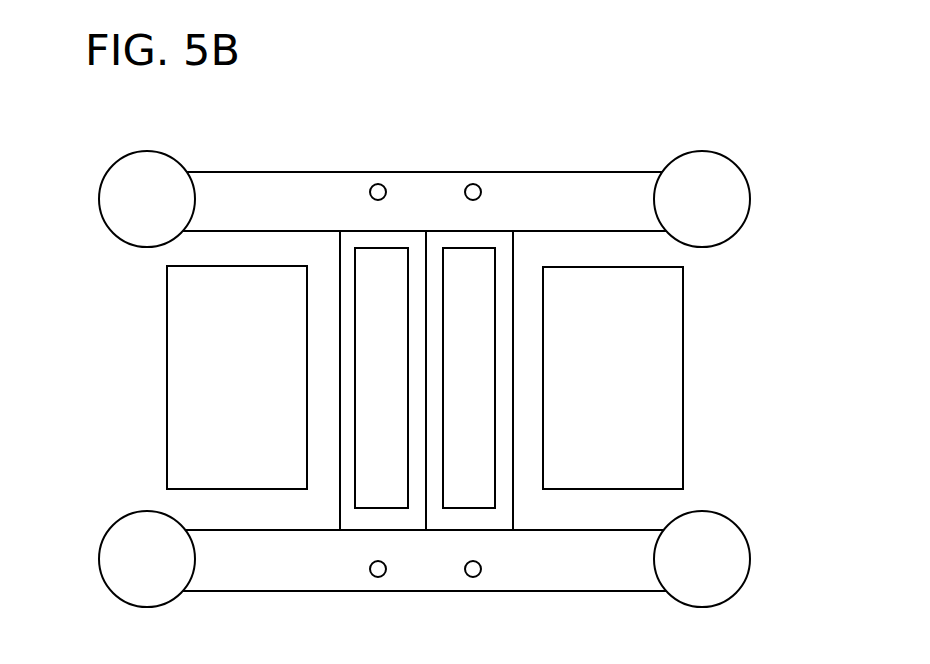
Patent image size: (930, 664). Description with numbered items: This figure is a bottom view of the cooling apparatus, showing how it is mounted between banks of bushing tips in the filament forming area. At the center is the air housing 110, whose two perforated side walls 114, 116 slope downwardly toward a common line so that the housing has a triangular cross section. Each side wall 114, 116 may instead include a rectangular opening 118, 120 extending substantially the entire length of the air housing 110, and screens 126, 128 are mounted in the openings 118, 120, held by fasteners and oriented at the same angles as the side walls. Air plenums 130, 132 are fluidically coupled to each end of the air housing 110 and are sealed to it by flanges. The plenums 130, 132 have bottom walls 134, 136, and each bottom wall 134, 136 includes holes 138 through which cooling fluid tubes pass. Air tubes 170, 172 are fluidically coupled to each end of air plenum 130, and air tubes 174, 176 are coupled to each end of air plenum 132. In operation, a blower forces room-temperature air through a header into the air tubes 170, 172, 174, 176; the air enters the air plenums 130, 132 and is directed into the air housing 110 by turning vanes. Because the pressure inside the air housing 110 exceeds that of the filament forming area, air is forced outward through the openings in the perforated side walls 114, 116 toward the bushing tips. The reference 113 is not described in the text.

The air housing 110 is at (512, 357).
The electrode pad 113 is at (178, 347).
The perforated side wall 114 is at (345, 304).
The perforated side wall 116 is at (505, 305).
The rectangular opening 118 is at (355, 366).
The rectangular opening 120 is at (495, 405).
The screen 126 is at (355, 443).
The screen 128 is at (495, 460).
The air plenum 130 is at (633, 542).
The air plenum 132 is at (563, 185).
The bottom wall 134 is at (283, 580).
The bottom wall 136 is at (265, 182).
The holes 138 is at (470, 190).
The air tube 170 is at (128, 527).
The air tube 172 is at (728, 541).
The air tube 174 is at (118, 182).
The air tube 176 is at (713, 175).